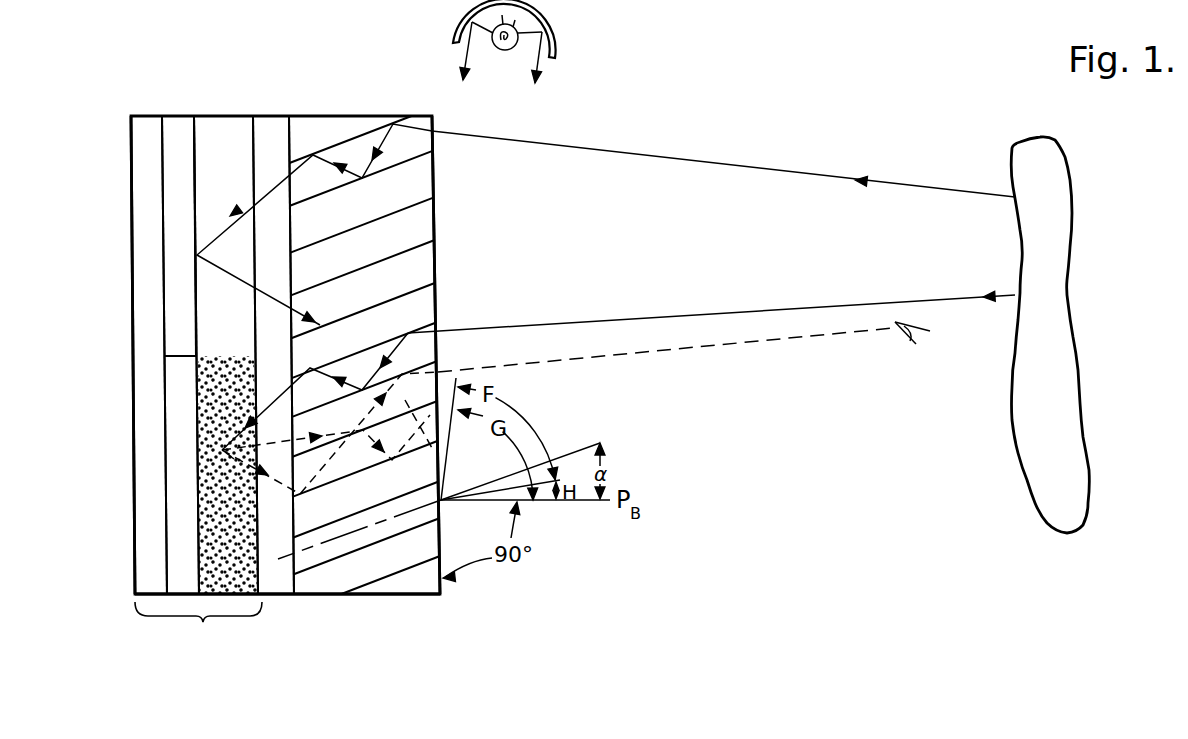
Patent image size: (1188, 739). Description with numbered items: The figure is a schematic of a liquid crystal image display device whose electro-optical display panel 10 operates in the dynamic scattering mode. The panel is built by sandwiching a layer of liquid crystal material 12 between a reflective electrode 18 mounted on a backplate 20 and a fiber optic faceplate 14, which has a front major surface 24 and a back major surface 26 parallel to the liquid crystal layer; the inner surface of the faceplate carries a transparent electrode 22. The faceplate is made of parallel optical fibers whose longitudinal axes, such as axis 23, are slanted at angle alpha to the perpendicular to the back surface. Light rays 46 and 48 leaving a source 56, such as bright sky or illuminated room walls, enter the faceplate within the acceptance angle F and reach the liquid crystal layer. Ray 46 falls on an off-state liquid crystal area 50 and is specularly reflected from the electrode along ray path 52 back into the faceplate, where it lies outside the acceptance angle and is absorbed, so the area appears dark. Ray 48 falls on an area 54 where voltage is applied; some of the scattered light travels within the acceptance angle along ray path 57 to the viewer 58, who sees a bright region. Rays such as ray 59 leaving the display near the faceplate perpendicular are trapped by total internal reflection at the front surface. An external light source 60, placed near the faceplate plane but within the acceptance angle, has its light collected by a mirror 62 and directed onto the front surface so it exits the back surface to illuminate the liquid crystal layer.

The electro-optical display panel 10 is at (198, 626).
The liquid crystal material layer 12 is at (218, 116).
The fiber optic faceplate 14 is at (369, 114).
The reflective electrode 18 is at (172, 125).
The backplate 20 is at (145, 115).
The transparent electrode 22 is at (281, 597).
The fiber longitudinal axis 23 is at (598, 442).
The front major surface 24 is at (437, 123).
The back major surface 26 is at (291, 143).
The light ray 46 is at (704, 161).
The light ray 48 is at (689, 316).
The off-state liquid crystal area 50 is at (207, 180).
The ray path 52 is at (274, 293).
The on-state liquid crystal area 54 is at (222, 512).
The light source 56 is at (1067, 160).
The ray path 57 is at (744, 346).
The viewer 58 is at (912, 343).
The light ray 59 is at (284, 484).
The external light source 60 is at (508, 50).
The mirror 62 is at (558, 42).